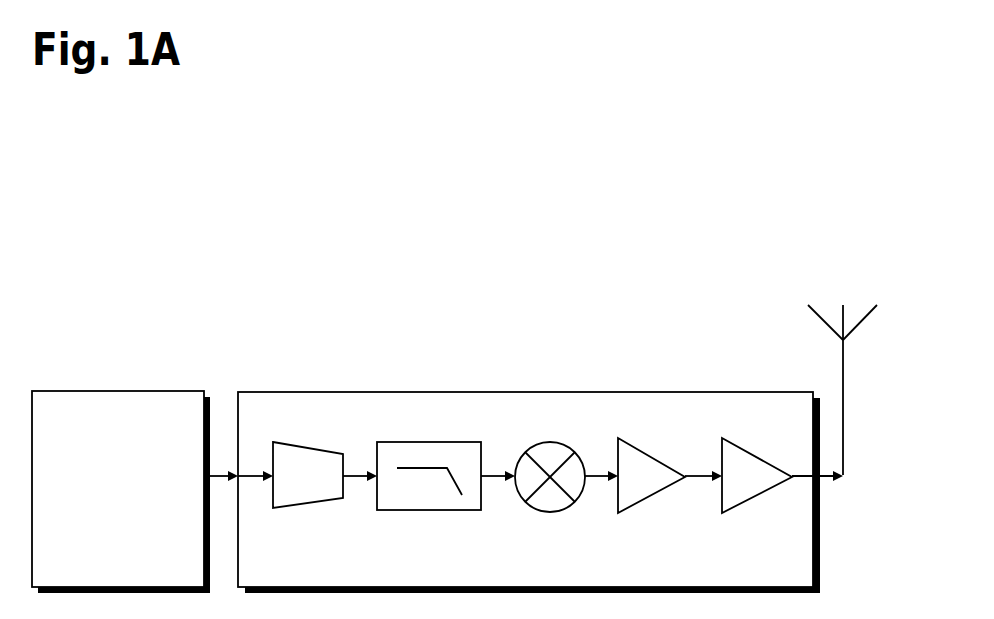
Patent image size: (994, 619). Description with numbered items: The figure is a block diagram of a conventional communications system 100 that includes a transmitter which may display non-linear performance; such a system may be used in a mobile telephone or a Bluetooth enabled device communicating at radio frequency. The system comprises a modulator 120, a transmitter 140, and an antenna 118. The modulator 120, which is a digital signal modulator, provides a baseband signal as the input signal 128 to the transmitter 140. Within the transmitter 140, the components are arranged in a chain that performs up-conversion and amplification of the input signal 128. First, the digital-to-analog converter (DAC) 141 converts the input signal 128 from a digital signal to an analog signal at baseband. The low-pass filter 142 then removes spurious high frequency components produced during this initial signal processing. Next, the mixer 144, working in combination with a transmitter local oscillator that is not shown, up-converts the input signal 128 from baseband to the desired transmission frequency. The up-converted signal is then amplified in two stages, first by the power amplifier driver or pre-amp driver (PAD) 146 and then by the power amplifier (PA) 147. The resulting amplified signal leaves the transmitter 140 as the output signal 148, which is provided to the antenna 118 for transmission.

The communications system 100 is at (786, 117).
The antenna 118 is at (843, 358).
The modulator 120 is at (129, 390).
The input signal 128 is at (220, 472).
The transmitter 140 is at (548, 580).
The digital-to-analog converter (DAC) 141 is at (307, 505).
The low-pass filter 142 is at (440, 442).
The mixer 144 is at (562, 512).
The power amplifier driver (PAD) 146 is at (658, 452).
The power amplifier (PA) 147 is at (760, 452).
The output signal 148 is at (822, 485).